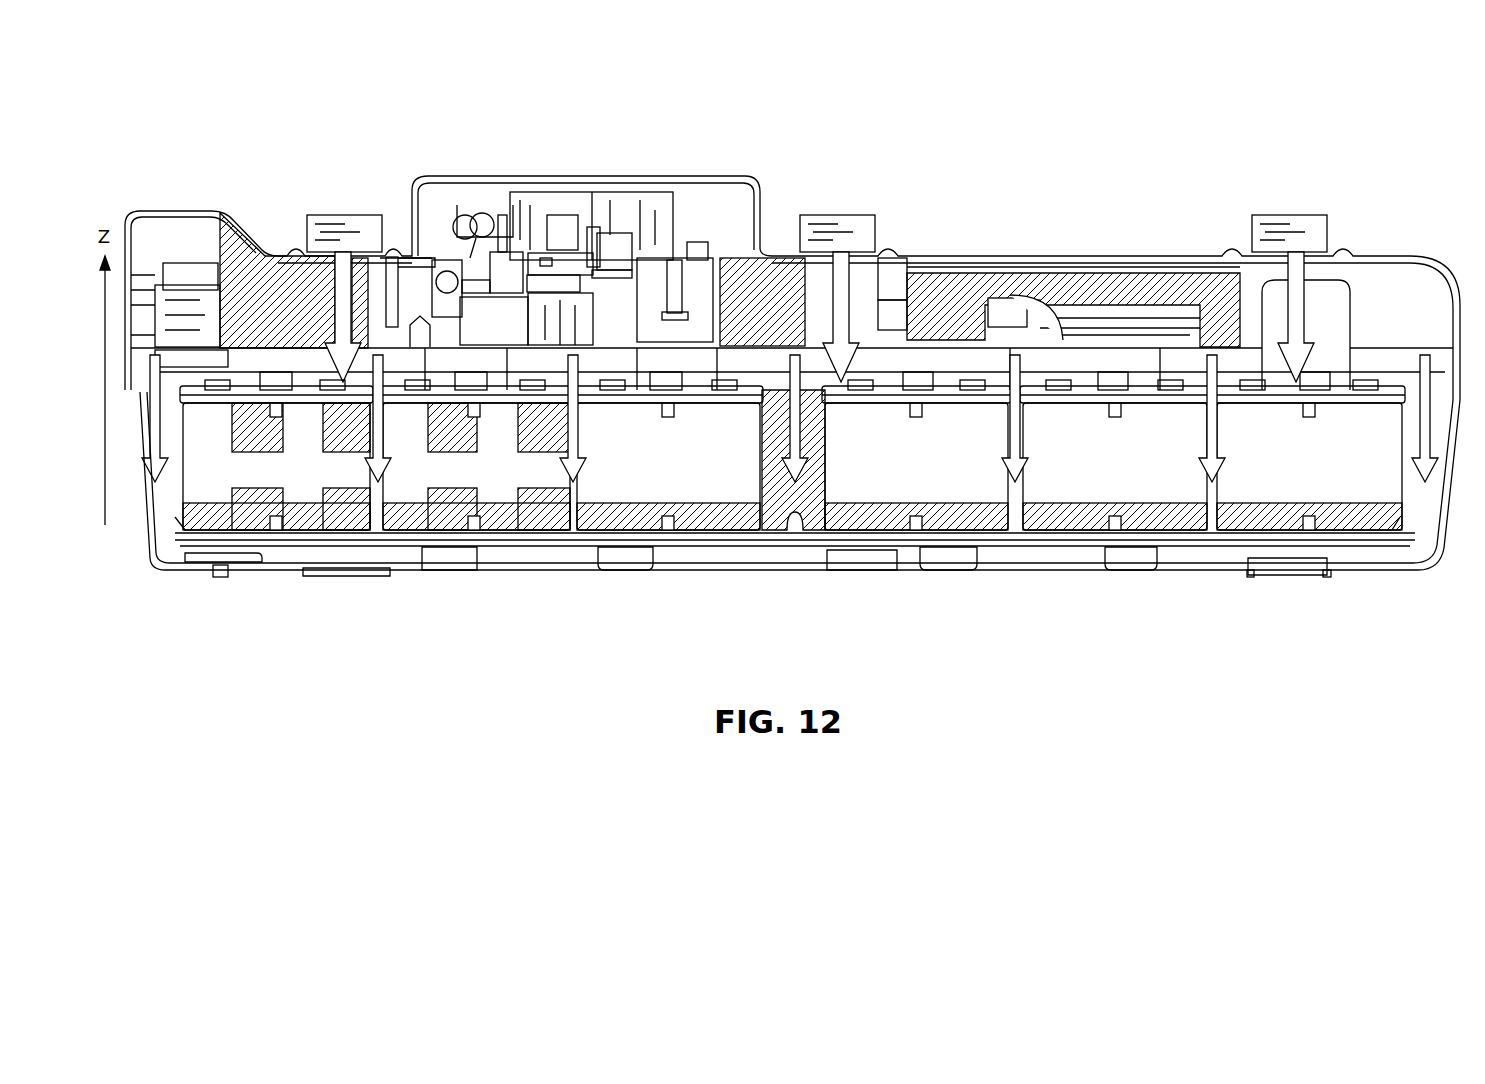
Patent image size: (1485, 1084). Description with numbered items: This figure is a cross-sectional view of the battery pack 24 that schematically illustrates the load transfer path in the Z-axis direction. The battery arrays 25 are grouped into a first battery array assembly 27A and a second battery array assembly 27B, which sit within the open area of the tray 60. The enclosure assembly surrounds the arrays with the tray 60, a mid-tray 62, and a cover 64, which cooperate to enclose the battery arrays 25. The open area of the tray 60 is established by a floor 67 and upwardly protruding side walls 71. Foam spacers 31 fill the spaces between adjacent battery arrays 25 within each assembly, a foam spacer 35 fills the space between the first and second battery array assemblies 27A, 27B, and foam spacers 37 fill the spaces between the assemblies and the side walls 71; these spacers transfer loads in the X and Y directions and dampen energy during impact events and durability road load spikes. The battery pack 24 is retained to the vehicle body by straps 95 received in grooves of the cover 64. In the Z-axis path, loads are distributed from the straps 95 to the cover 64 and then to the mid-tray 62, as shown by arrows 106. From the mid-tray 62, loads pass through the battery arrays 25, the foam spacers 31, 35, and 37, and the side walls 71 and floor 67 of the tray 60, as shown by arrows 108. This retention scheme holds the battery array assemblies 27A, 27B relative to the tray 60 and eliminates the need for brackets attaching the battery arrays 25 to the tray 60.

The battery pack 24 is at (1094, 208).
The battery arrays 25 is at (792, 455).
The first battery array assembly 27A is at (439, 510).
The second battery array assembly 27B is at (1158, 510).
The foam spacers 31 is at (767, 577).
The foam spacer 35 is at (802, 522).
The foam spacers 37 is at (176, 518).
The tray 60 is at (1345, 582).
The mid-tray 62 is at (1334, 306).
The cover 64 is at (1376, 248).
The floor 67 is at (717, 547).
The side walls 71 is at (139, 420).
The straps 95 is at (345, 212).
The arrows 106 is at (333, 268).
The arrows 108 is at (790, 418).